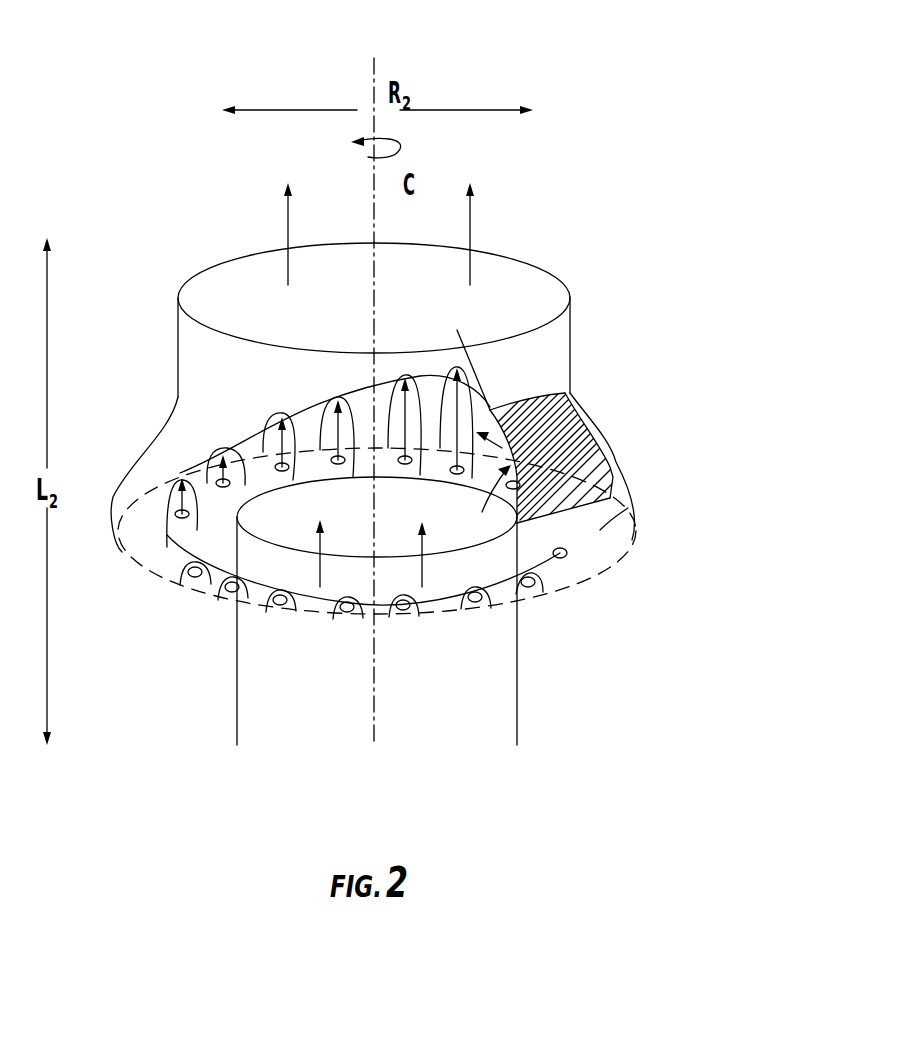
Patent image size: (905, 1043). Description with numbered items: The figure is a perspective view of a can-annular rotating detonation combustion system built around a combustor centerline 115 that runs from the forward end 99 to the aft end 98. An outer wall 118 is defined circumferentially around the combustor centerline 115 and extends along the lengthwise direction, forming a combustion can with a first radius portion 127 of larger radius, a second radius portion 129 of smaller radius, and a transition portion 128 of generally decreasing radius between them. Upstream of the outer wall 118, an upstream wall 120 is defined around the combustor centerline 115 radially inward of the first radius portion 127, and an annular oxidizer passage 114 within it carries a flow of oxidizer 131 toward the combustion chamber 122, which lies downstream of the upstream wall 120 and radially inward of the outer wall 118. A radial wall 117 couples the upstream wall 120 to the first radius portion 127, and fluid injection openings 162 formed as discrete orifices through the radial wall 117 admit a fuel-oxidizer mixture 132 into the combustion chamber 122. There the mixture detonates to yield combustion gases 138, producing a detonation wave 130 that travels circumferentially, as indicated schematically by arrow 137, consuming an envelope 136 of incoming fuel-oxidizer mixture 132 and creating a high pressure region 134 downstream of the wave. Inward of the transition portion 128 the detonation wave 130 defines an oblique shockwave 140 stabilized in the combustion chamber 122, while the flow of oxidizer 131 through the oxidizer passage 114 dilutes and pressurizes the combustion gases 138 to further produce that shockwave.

The aft end 98 is at (385, 38).
The forward end 99 is at (378, 794).
The oxidizer passage 114 is at (448, 700).
The combustor centerline 115 is at (374, 62).
The radial wall 117 is at (600, 530).
The outer wall 118 is at (608, 440).
The upstream wall 120 is at (517, 672).
The combustion chamber 122 is at (531, 374).
The first radius portion 127 is at (644, 547).
The transition portion 128 is at (597, 413).
The second radius portion 129 is at (578, 335).
The detonation wave 130 is at (616, 455).
The flow of oxidizer 131 is at (422, 560).
The fuel-oxidizer mixture 132 is at (167, 535).
The high pressure region 134 is at (498, 393).
The envelope 136 is at (296, 406).
The arrow 137 is at (477, 407).
The combustion gases 138 is at (470, 222).
The oblique shockwave 140 is at (478, 503).
The fluid injection opening 162 is at (282, 616).